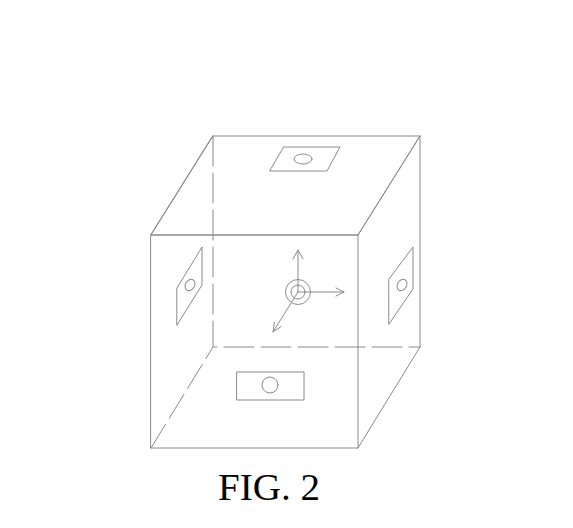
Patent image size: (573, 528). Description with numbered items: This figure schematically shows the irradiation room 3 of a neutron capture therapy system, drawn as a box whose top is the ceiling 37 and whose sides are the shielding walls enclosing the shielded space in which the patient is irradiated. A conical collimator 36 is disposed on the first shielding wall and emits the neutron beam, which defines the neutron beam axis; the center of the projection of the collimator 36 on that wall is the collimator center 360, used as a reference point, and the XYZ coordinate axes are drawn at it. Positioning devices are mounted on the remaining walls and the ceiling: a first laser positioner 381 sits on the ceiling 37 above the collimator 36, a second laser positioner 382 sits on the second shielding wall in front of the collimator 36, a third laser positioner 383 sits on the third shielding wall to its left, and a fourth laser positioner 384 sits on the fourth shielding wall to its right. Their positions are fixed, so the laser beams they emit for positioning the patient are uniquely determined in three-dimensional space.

The irradiation room 3 is at (280, 45).
The collimator 36 is at (308, 284).
The ceiling 37 is at (360, 157).
The collimator center 360 is at (307, 300).
The first laser positioner 381 is at (308, 147).
The second laser positioner 382 is at (237, 383).
The third laser positioner 383 is at (177, 305).
The fourth laser positioner 384 is at (414, 273).